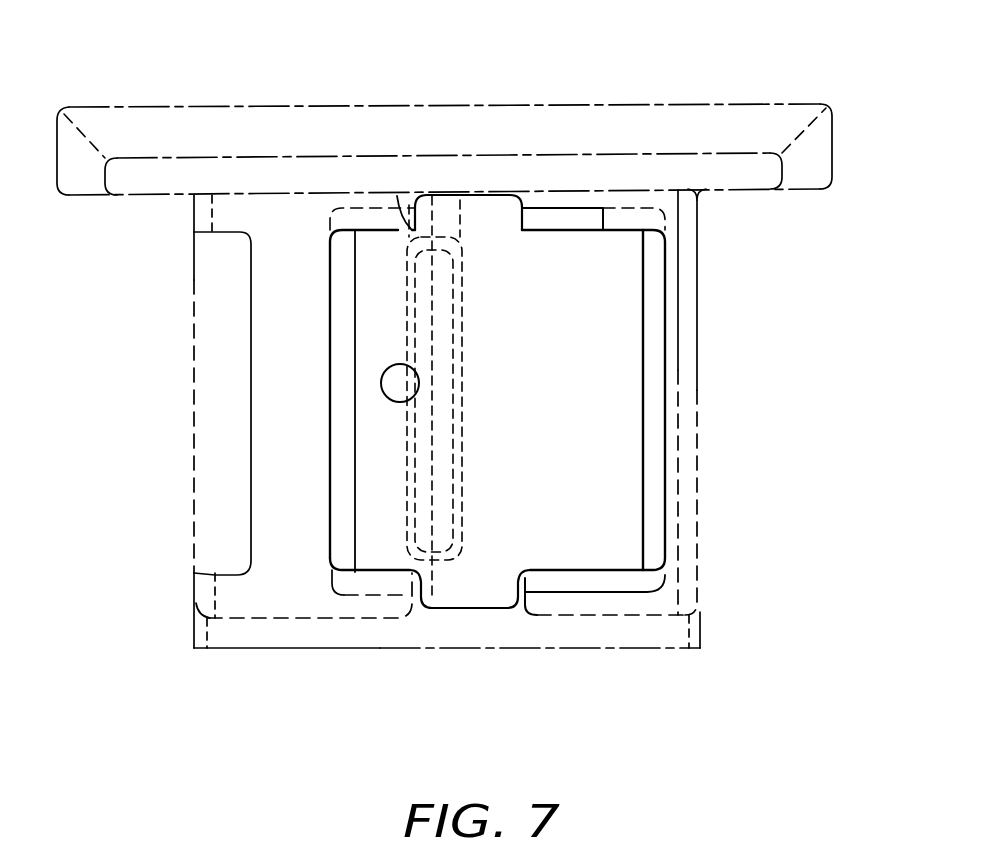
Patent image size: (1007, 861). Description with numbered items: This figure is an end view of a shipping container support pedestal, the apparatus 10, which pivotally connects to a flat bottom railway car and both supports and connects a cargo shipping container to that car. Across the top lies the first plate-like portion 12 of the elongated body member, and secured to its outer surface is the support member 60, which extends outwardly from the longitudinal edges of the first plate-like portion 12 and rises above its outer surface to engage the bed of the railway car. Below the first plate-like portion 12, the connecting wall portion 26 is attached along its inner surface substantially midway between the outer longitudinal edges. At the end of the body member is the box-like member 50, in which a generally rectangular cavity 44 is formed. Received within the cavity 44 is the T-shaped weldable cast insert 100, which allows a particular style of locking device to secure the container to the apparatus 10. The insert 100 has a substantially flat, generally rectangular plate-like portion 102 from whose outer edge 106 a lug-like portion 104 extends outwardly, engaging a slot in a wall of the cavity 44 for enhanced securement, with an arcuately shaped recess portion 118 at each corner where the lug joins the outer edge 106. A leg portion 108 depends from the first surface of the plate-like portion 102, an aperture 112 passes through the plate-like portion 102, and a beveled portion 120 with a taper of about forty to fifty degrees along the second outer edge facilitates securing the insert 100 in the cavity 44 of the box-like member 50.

The apparatus 10 is at (456, 96).
The support member 60 is at (830, 122).
The first plate-like portion 12 is at (762, 180).
The box-like member 50 is at (696, 320).
The connecting wall portion 26 is at (448, 587).
The weldable cast insert 100 is at (552, 390).
The beveled portion 120 is at (338, 334).
The plate-like portion 102 is at (632, 443).
The lug-like portion 104 is at (483, 207).
The outer edge 106 is at (604, 228).
The cavity 44 is at (632, 584).
The arcuately shaped recess portion 118 is at (413, 228).
The leg portion 108 is at (413, 475).
The aperture 112 is at (392, 392).